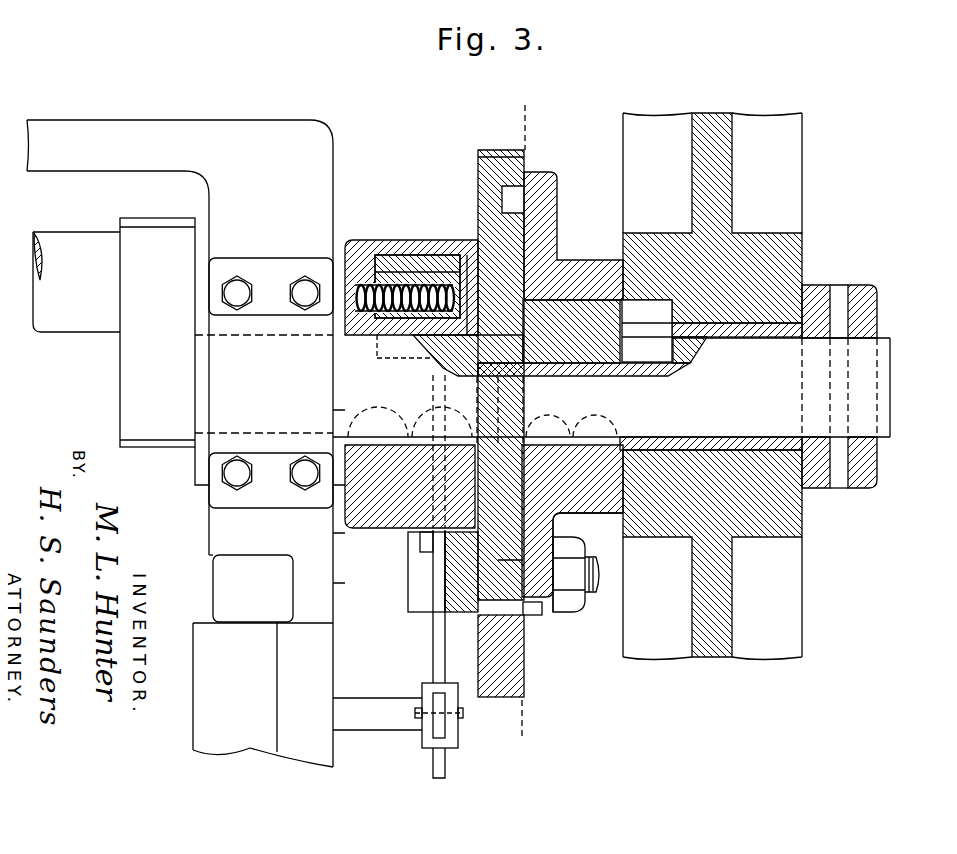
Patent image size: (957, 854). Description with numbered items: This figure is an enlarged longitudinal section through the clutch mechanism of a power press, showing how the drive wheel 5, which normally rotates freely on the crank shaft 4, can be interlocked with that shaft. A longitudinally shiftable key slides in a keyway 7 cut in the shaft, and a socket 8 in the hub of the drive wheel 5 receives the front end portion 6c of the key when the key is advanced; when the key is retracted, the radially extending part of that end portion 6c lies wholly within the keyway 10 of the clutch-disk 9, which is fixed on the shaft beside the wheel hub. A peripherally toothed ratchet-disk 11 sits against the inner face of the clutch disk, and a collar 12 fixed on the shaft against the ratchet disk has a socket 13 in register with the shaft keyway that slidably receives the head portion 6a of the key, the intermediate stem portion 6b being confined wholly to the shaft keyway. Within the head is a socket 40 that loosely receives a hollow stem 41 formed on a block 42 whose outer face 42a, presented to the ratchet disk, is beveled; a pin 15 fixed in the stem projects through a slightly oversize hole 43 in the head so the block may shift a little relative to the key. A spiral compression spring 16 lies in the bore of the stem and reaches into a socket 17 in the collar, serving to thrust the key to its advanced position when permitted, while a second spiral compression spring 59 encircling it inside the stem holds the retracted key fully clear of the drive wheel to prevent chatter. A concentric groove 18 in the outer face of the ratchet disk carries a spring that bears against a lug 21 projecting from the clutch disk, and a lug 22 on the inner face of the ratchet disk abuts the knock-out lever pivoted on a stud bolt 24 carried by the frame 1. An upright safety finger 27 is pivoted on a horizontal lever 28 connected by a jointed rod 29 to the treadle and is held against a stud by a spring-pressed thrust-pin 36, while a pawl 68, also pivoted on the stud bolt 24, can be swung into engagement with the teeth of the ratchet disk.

The frame 1 is at (209, 530).
The crank shaft 4 is at (900, 390).
The drive wheel 5 is at (802, 248).
The head portion of the key 6a is at (395, 330).
The stem portion of the key 6b is at (503, 357).
The front end portion of the key 6c is at (566, 303).
The keyway 7 is at (651, 355).
The socket 8 is at (652, 305).
The clutch-disk 9 is at (557, 213).
The keyway 10 is at (592, 300).
The ratchet-disk 11 is at (493, 165).
The collar 12 is at (341, 514).
The socket 13 is at (337, 250).
The pin 15 is at (380, 275).
The spiral compression spring 16 is at (340, 340).
The socket 17 is at (340, 323).
The groove or channel 18 is at (540, 190).
The lug 21 is at (523, 600).
The lug 22 is at (445, 560).
The stud bolt 24 is at (597, 592).
The safety finger 27 is at (433, 660).
The lever 28 is at (443, 725).
The rod 29 is at (433, 765).
The thrust-pin 36 is at (420, 538).
The socket 40 is at (416, 330).
The hollow stem 41 is at (435, 275).
The block 42 is at (432, 360).
The outer face of the block 42a is at (470, 262).
The hole 43 is at (407, 252).
The spiral compression spring 59 is at (377, 377).
The pawl 68 is at (524, 675).